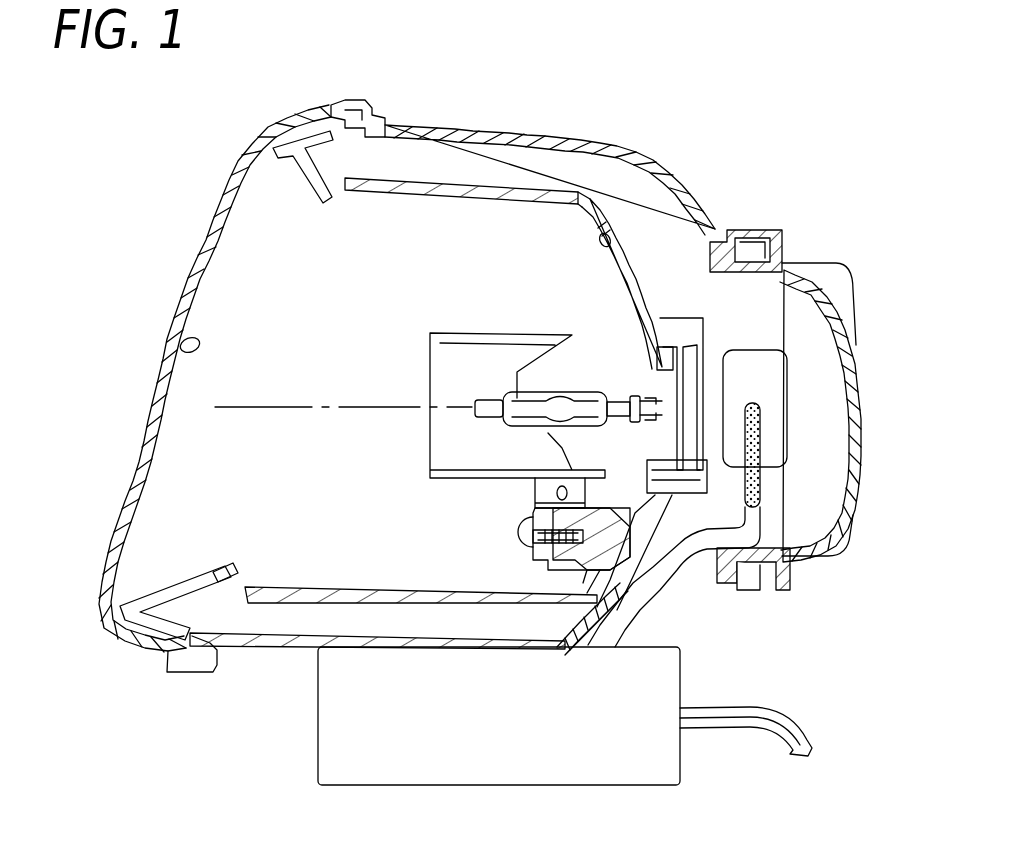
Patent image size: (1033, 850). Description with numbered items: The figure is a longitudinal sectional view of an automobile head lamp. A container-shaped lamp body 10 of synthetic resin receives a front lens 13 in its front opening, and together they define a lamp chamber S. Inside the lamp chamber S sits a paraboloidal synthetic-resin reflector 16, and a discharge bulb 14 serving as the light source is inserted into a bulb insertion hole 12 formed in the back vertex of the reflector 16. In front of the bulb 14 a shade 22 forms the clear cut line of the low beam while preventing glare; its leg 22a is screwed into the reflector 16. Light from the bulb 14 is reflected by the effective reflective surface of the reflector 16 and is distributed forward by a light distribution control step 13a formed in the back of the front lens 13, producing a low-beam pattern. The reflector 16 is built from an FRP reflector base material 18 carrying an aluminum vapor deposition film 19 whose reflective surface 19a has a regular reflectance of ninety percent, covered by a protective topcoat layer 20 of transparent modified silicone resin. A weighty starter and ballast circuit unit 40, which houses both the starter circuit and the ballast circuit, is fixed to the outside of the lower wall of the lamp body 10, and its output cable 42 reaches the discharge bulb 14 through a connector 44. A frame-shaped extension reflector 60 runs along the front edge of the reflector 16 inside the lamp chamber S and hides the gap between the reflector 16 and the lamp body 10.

The lamp body 10 is at (633, 162).
The bulb insertion hole 12 is at (677, 357).
The front lens 13 is at (190, 268).
The light distribution control step 13a is at (178, 350).
The discharge bulb 14 is at (572, 384).
The reflector 16 is at (603, 258).
The reflector base material 18 is at (497, 183).
The aluminum vapor deposition film 19 is at (610, 230).
The reflective surface 19a is at (606, 233).
The topcoat layer 20 is at (602, 225).
The shade 22 is at (503, 333).
The leg 22a is at (535, 498).
The starter and ballast circuit unit 40 is at (682, 680).
The output cable 42 is at (690, 600).
The connector 44 is at (787, 467).
The extension reflector 60 is at (285, 182).
The lamp chamber S is at (250, 314).